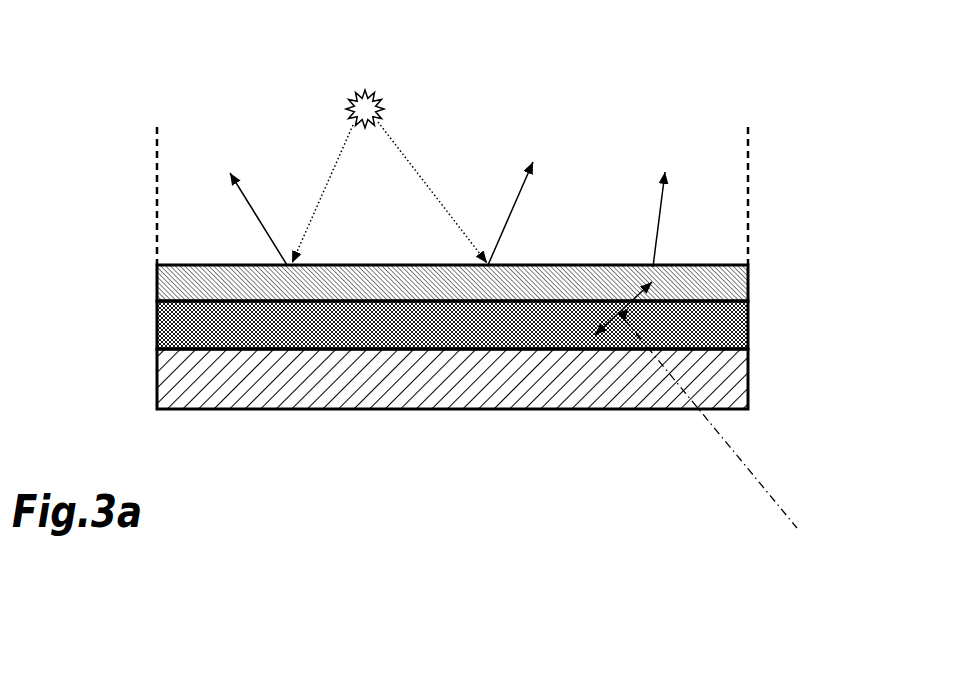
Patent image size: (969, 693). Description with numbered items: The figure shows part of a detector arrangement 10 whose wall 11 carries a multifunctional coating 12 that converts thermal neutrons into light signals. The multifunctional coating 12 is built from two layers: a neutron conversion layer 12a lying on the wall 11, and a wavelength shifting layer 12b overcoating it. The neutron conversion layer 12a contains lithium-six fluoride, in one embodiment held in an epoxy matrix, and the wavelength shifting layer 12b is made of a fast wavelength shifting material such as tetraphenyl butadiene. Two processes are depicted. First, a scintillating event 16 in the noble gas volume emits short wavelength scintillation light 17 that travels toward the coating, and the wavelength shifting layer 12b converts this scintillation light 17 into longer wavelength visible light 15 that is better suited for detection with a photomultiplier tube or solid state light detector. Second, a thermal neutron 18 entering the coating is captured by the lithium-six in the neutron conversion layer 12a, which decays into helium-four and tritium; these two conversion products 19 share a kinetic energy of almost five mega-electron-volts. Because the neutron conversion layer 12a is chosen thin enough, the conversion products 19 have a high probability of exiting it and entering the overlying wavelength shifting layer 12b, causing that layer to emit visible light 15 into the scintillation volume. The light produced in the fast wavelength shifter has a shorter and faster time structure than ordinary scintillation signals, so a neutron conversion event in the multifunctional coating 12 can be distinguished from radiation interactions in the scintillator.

The detector arrangement 10 is at (797, 560).
The wall 11 is at (242, 385).
The multifunctional coating 12 is at (465, 314).
The neutron conversion layer 12a is at (735, 327).
The wavelength shifting layer 12b is at (735, 282).
The visible light 15 is at (456, 214).
The scintillating event 16 is at (380, 92).
The scintillation light 17 is at (335, 173).
The thermal neutron 18 is at (711, 426).
The conversion products 19 is at (617, 317).